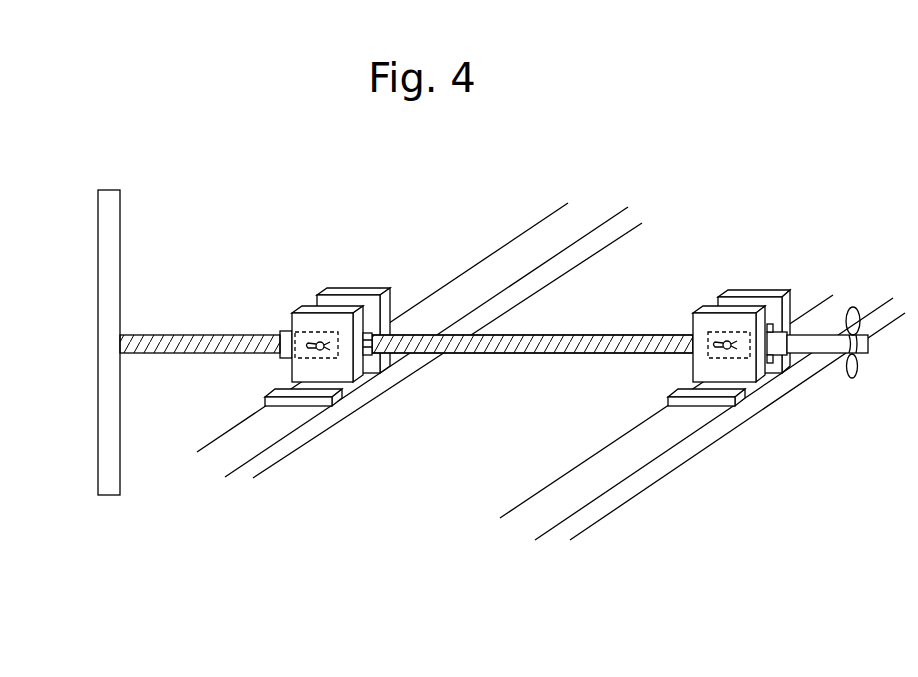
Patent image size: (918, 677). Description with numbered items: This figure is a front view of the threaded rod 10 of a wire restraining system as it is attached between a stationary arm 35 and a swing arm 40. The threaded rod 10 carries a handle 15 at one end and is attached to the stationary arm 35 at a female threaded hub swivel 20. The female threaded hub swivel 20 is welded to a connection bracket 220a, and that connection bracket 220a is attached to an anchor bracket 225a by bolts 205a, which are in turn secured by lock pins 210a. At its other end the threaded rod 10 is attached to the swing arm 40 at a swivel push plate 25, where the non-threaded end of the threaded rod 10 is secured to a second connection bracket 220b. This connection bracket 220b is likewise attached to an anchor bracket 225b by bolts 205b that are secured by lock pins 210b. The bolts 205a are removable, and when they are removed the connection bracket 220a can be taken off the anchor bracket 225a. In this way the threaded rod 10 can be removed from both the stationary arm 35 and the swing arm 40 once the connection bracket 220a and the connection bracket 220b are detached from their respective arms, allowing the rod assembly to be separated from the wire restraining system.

The threaded rod 10 is at (235, 343).
The handle 15 is at (112, 197).
The female threaded hub swivel 20 is at (388, 362).
The swivel push plate 25 is at (772, 367).
The stationary arm 35 is at (472, 288).
The swing arm 40 is at (627, 458).
The bolts 205a is at (318, 348).
The bolts 205b is at (728, 344).
The lock pins 210a is at (312, 351).
The lock pins 210b is at (713, 349).
The connection bracket 220a is at (287, 328).
The connection bracket 220b is at (792, 355).
The anchor bracket 225a is at (367, 377).
The anchor bracket 225b is at (697, 320).